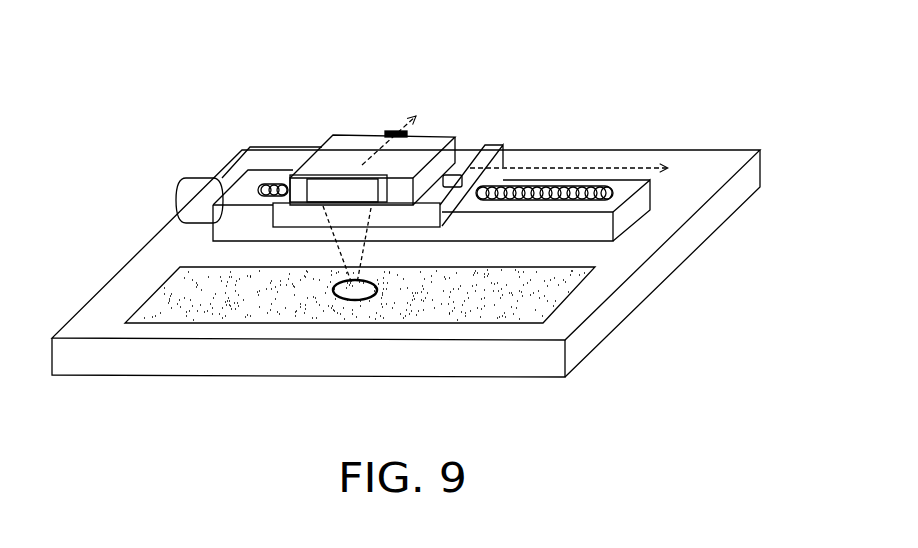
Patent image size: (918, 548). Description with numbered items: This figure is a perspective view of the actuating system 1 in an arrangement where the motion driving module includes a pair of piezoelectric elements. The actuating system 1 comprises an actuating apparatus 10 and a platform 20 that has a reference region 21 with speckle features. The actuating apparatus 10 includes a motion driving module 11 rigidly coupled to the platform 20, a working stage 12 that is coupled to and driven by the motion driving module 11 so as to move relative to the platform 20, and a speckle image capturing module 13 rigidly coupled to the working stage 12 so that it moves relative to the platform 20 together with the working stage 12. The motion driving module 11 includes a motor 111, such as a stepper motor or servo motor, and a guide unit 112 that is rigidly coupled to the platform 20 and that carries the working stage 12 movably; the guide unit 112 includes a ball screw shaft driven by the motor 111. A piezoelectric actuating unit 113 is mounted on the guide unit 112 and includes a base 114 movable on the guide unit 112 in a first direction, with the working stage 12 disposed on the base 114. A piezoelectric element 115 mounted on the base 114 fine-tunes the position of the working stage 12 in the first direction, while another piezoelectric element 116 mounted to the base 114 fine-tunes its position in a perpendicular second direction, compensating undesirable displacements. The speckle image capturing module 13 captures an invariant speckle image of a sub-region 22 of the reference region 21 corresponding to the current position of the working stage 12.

The actuating system 1 is at (683, 126).
The actuating apparatus 10 is at (341, 104).
The motion driving module 11 is at (247, 163).
The motor 111 is at (188, 188).
The guide unit 112 is at (223, 230).
The working stage 12 is at (426, 145).
The piezoelectric actuating unit 113 is at (468, 166).
The base 114 is at (560, 152).
The piezoelectric element 115 is at (452, 158).
The another piezoelectric element 116 is at (390, 130).
The speckle image capturing module 13 is at (322, 204).
The platform 20 is at (697, 262).
The reference region 21 is at (577, 299).
The sub-region 22 is at (333, 297).